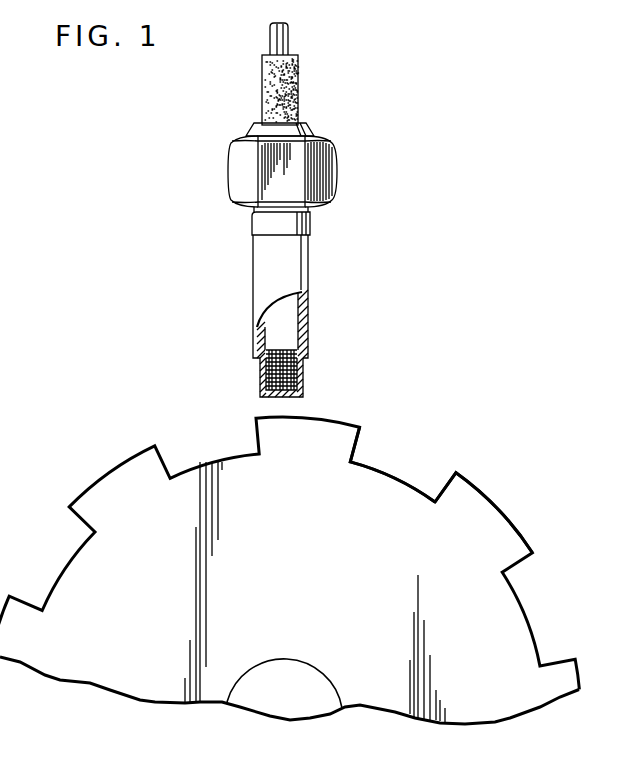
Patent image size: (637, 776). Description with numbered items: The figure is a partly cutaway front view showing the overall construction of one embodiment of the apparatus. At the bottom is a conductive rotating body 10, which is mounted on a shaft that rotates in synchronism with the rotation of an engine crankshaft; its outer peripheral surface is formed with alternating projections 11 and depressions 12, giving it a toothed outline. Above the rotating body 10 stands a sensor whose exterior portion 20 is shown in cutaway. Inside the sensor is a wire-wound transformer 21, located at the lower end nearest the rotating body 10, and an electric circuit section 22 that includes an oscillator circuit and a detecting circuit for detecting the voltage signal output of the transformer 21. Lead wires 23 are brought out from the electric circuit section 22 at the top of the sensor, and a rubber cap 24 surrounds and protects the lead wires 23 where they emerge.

The conductive rotating body 10 is at (415, 497).
The projections 11 is at (377, 471).
The depressions 12 is at (497, 508).
The exterior portion of sensor 20 is at (303, 255).
The wire-wound transformer 21 is at (303, 372).
The electric circuit section 22 is at (296, 320).
The lead wires 23 is at (291, 39).
The rubber cap 24 is at (299, 86).